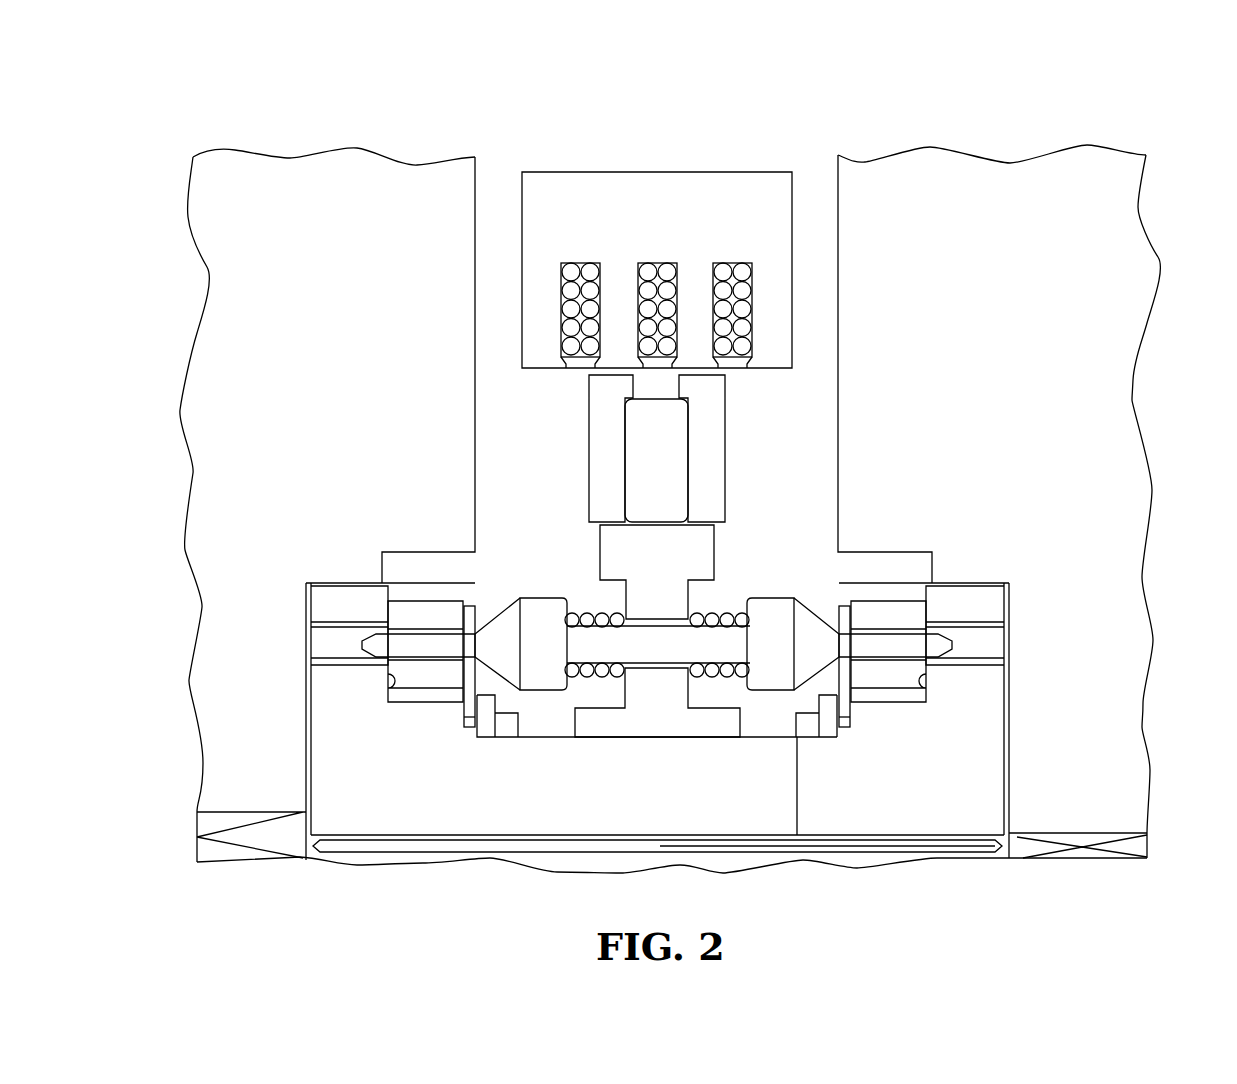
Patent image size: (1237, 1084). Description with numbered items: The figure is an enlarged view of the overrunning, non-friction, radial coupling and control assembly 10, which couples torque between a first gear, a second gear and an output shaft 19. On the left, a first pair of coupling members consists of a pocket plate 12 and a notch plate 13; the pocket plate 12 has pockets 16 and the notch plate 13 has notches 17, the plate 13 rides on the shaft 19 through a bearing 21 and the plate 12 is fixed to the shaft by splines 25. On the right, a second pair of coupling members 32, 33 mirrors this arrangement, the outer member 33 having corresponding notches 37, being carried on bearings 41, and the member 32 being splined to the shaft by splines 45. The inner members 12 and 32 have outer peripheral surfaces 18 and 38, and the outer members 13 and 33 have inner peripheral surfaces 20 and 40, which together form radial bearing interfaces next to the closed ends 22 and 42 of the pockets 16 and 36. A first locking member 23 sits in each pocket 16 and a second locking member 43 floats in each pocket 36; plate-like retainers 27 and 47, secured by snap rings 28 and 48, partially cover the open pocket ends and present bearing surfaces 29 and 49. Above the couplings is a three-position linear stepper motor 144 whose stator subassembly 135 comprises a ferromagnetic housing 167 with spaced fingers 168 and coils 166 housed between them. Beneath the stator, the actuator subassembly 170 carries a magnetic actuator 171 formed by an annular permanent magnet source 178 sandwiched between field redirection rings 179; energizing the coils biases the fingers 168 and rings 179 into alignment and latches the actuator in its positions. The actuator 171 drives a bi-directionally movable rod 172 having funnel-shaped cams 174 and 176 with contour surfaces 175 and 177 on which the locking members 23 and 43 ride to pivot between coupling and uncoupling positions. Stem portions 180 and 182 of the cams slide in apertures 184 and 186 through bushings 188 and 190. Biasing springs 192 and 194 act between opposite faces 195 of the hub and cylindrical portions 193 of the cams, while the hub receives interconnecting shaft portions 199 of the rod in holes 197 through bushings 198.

The coupling and control assembly 10 is at (762, 94).
The pocket plate 12 is at (363, 812).
The notch plate 13 is at (348, 436).
The pockets 16 is at (445, 702).
The notches 17 is at (460, 617).
The outer peripheral surface 18 is at (360, 582).
The output shaft 19 is at (560, 870).
The inner peripheral surface 20 is at (326, 592).
The bearing 21 is at (257, 823).
The closed end 22 is at (392, 698).
The first locking member 23 is at (450, 600).
The splines 25 is at (478, 841).
The retainer 27 is at (469, 727).
The snap ring 28 is at (487, 737).
The bearing surface 29 is at (400, 580).
The second coupling member 32 is at (928, 813).
The second coupling member 33 is at (1008, 436).
The pockets 36 is at (888, 702).
The opening 37 is at (855, 618).
The outer peripheral surface 38 is at (954, 582).
The inner peripheral surface 40 is at (988, 592).
The bearings 41 is at (1150, 846).
The closed end 42 is at (927, 698).
The second locking member 43 is at (864, 600).
The splines 45 is at (862, 847).
The retainer 47 is at (846, 727).
The snap ring 48 is at (828, 737).
The bearing surface 49 is at (914, 580).
The stator subassembly 135 is at (625, 160).
The linear stepper motor 144 is at (595, 126).
The coil 166 is at (618, 288).
The ferromagnetic housing 167 is at (792, 172).
The fingers 168 is at (573, 273).
The actuator subassembly 170 is at (783, 435).
The magnetic actuator 171 is at (740, 390).
The rod 172 is at (669, 682).
The funnel-shaped cam 174 is at (507, 675).
The contour surface 175 is at (544, 697).
The funnel-shaped cam 176 is at (812, 683).
The contour surface 177 is at (770, 705).
The permanent magnet source 178 is at (663, 480).
The field redirection rings 179 is at (603, 432).
The stem portion 180 is at (427, 650).
The stem portion 182 is at (892, 650).
The aperture 184 is at (330, 628).
The aperture 186 is at (685, 552).
The bushing 188 is at (352, 664).
The bushing 190 is at (980, 620).
The biasing spring member 192 is at (600, 618).
The cylindrical portions 193 is at (540, 618).
The biasing spring member 194 is at (857, 618).
The opposite faces 195 is at (608, 685).
The holes 197 is at (641, 616).
The bushings 198 is at (662, 617).
The interconnecting shaft portions 199 is at (655, 650).